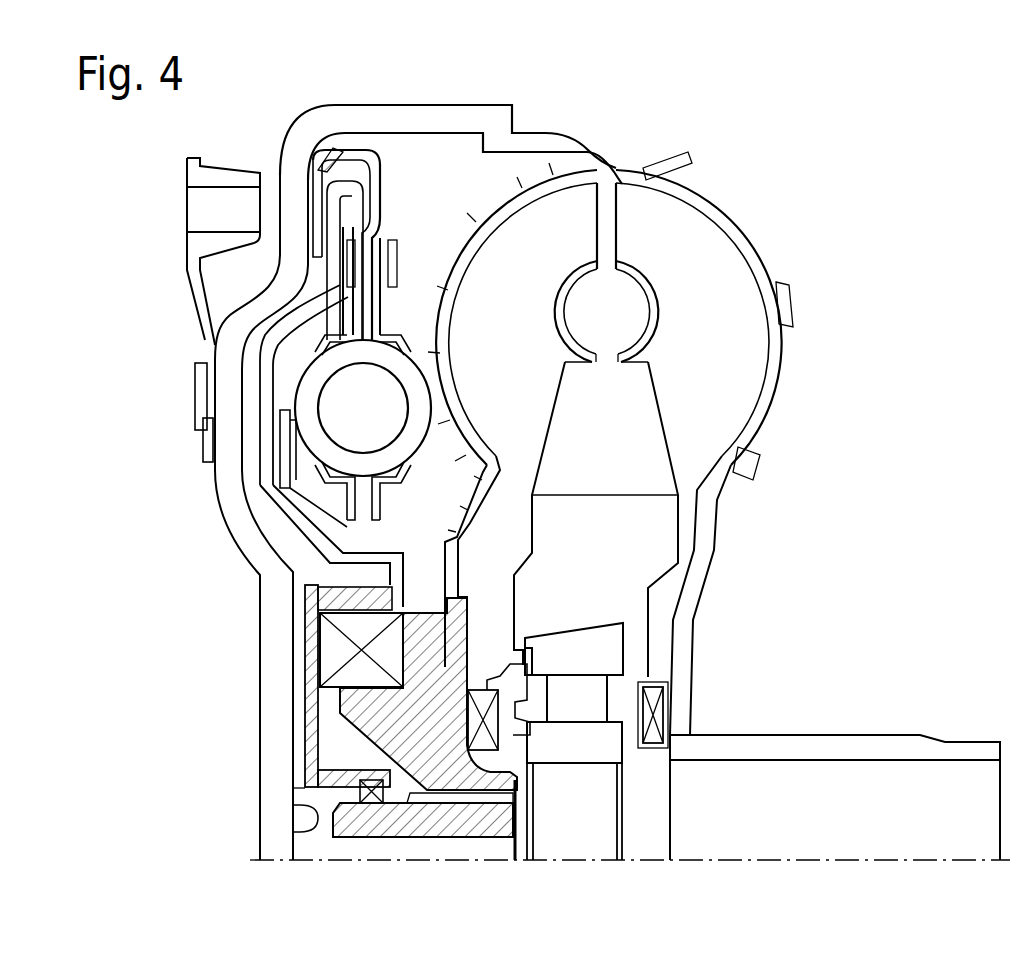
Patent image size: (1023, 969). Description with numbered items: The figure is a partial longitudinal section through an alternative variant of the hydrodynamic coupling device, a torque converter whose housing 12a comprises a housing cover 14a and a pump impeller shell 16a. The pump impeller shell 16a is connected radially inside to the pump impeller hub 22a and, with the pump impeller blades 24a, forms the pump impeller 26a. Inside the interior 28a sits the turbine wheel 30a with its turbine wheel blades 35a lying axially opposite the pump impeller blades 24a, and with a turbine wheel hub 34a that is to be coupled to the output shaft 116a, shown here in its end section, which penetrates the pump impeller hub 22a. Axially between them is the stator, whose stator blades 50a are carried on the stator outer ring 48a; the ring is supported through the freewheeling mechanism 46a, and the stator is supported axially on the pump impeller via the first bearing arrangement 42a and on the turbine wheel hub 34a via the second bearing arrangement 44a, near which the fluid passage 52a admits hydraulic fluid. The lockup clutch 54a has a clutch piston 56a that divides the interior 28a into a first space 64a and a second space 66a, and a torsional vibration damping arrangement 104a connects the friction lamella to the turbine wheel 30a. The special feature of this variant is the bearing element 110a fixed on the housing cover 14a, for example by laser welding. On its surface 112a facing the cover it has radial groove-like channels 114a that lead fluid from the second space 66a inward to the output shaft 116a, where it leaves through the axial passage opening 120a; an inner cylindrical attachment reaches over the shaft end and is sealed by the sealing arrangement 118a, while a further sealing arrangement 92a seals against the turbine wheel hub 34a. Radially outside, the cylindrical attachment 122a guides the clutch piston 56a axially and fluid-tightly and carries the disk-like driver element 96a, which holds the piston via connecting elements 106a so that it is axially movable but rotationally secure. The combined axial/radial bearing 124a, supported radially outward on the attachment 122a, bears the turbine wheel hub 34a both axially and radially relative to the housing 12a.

The housing 12a is at (626, 156).
The housing cover 14a is at (236, 505).
The pump impeller shell 16a is at (768, 270).
The pump impeller hub 22a is at (820, 735).
The pump impeller blades 24a is at (725, 317).
The pump impeller 26a is at (806, 324).
The interior 28a is at (632, 314).
The turbine wheel 30a is at (418, 305).
The turbine wheel hub 34a is at (515, 808).
The turbine wheel blades 35a is at (535, 287).
The first bearing arrangement 42a is at (658, 720).
The second bearing arrangement 44a is at (470, 713).
The freewheeling mechanism 46a is at (614, 698).
The stator outer ring 48a is at (682, 527).
The stator blades 50a is at (623, 417).
The fluid passage 52a is at (540, 697).
The lockup clutch 54a is at (298, 164).
The clutch piston 56a is at (262, 385).
The first space 64a is at (700, 462).
The second space 66a is at (252, 442).
The sealing arrangement 92a is at (295, 806).
The driver element 96a is at (310, 574).
The torsional vibration damping arrangement 104a is at (292, 366).
The connecting elements 106a is at (296, 432).
The bearing element 110a is at (314, 675).
The surface 112a is at (305, 620).
The groove-like channels 114a is at (305, 728).
The output shaft 116a is at (385, 822).
The sealing arrangement 118a is at (365, 790).
The axial passage opening 120a is at (452, 848).
The cylindrical attachment 122a is at (340, 594).
The combined axial/radial bearing 124a is at (332, 645).